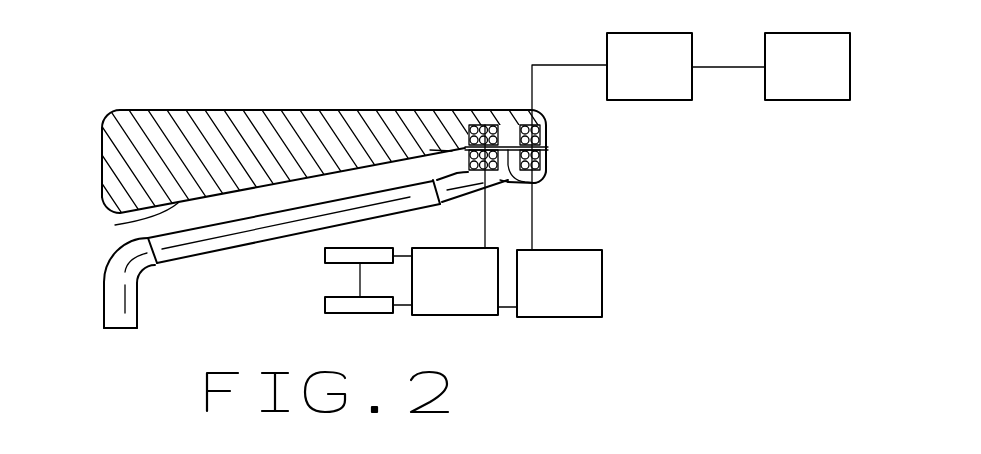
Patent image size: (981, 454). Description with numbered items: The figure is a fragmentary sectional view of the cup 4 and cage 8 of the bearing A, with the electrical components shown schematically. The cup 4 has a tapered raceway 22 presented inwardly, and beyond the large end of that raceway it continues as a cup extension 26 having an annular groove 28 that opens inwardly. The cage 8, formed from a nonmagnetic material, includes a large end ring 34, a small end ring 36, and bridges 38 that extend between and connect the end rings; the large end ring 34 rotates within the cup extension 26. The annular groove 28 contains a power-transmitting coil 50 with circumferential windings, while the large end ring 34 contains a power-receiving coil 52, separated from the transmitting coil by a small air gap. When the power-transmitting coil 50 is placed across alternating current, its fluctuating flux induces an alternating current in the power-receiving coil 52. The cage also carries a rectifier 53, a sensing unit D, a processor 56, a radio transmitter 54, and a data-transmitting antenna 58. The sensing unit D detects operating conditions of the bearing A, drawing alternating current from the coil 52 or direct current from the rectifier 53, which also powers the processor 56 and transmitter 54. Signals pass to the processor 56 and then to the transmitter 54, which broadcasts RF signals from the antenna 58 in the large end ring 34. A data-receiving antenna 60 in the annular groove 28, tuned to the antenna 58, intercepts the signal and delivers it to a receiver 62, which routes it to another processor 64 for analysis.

The cup 4 is at (143, 157).
The tapered raceway 22 is at (115, 225).
The small end ring 36 is at (115, 298).
The cage 8 is at (194, 257).
The bridges 38 is at (263, 237).
The power-transmitting coil 50 is at (485, 125).
The data-transmitting antenna 58 is at (548, 162).
The cup extension 26 is at (512, 110).
The power-receiving coil 52 is at (430, 150).
The data-receiving antenna 60 is at (548, 132).
The annular groove 28 is at (548, 180).
The large end ring 34 is at (500, 180).
The bearing A is at (560, 110).
The receiver 62 is at (655, 90).
The processor 64 is at (808, 87).
The rectifier 53 is at (457, 300).
The radio transmitter 54 is at (567, 307).
The processor 56 is at (360, 305).
The sensing unit D is at (320, 260).